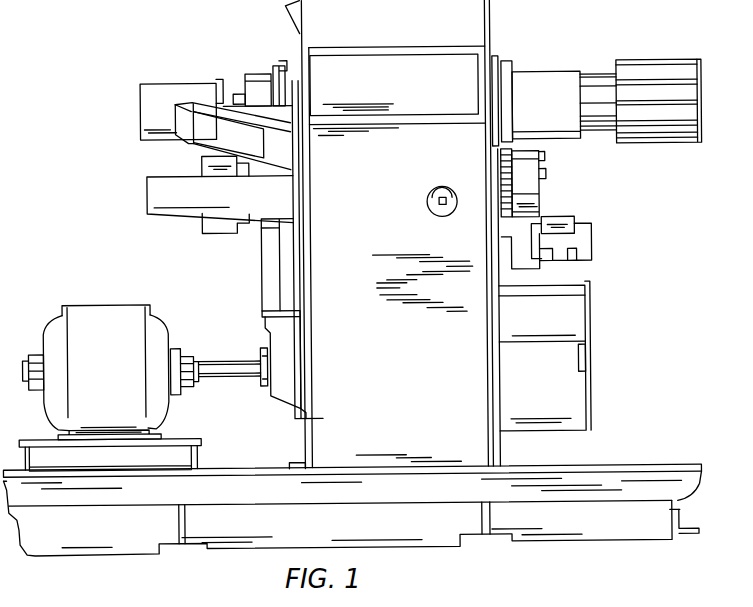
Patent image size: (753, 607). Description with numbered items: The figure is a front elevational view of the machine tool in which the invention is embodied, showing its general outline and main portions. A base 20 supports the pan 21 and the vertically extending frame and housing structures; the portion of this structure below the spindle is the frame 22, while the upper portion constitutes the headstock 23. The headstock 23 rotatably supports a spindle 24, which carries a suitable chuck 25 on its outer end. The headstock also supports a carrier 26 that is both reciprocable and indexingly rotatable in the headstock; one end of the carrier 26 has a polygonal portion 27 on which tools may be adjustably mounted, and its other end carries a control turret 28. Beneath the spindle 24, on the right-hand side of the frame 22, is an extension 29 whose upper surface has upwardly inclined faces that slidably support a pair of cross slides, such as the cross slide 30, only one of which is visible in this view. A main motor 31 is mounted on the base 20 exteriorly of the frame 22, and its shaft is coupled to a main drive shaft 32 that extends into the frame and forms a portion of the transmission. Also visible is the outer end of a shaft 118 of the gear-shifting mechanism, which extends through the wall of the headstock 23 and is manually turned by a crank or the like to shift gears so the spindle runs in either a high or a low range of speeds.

The base 20 is at (615, 527).
The pan 21 is at (643, 482).
The frame 22 is at (343, 434).
The headstock 23 is at (320, 62).
The spindle 24 is at (508, 173).
The chuck 25 is at (537, 196).
The carrier 26 is at (603, 83).
The polygonal portion 27 is at (673, 72).
The control turret 28 is at (183, 62).
The extension 29 is at (577, 409).
The cross slide 30 is at (575, 222).
The main motor 31 is at (128, 310).
The main drive shaft 32 is at (238, 348).
The shaft 118 is at (435, 203).